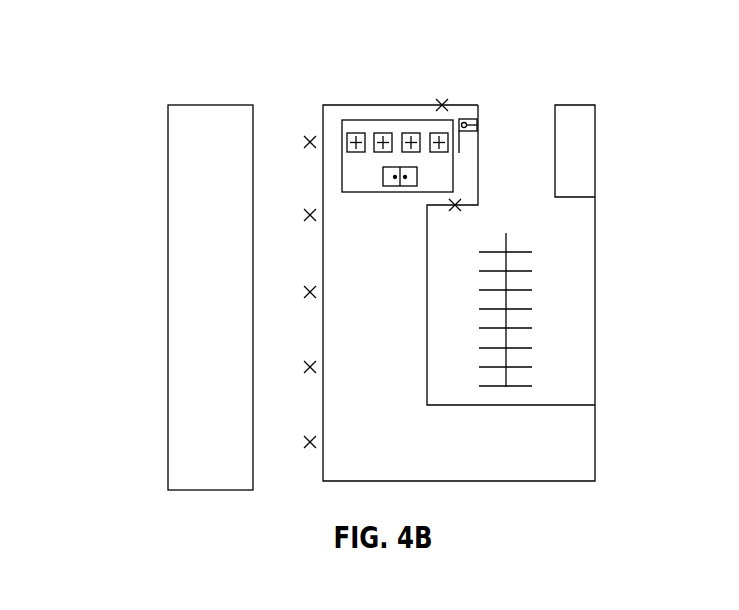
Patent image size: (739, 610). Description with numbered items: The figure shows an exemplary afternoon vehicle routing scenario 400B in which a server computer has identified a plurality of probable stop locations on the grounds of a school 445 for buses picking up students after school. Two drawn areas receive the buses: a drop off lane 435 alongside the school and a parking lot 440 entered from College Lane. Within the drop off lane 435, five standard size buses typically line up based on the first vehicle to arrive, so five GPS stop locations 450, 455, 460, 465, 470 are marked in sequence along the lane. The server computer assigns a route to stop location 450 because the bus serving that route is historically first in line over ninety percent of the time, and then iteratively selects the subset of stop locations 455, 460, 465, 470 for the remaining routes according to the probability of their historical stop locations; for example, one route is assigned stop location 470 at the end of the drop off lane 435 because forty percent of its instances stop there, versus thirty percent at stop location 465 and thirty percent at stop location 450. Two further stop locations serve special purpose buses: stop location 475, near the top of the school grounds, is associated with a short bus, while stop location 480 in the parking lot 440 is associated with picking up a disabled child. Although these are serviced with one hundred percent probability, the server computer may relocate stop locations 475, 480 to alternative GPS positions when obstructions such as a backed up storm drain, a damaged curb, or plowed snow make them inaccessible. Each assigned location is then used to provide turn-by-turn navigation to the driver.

The afternoon vehicle routing scenario 400B is at (166, 56).
The drop off lane 435 is at (282, 190).
The parking lot 440 is at (585, 287).
The school 445 is at (397, 194).
The stop location 450 is at (304, 142).
The stop location 455 is at (304, 215).
The stop location 460 is at (304, 292).
The stop location 465 is at (304, 367).
The stop location 470 is at (304, 442).
The stop location 475 is at (445, 102).
The stop location 480 is at (459, 203).